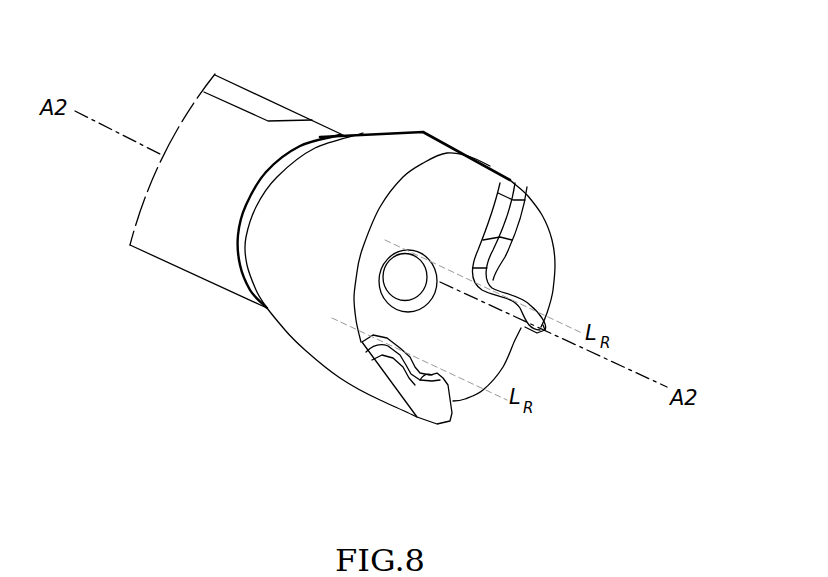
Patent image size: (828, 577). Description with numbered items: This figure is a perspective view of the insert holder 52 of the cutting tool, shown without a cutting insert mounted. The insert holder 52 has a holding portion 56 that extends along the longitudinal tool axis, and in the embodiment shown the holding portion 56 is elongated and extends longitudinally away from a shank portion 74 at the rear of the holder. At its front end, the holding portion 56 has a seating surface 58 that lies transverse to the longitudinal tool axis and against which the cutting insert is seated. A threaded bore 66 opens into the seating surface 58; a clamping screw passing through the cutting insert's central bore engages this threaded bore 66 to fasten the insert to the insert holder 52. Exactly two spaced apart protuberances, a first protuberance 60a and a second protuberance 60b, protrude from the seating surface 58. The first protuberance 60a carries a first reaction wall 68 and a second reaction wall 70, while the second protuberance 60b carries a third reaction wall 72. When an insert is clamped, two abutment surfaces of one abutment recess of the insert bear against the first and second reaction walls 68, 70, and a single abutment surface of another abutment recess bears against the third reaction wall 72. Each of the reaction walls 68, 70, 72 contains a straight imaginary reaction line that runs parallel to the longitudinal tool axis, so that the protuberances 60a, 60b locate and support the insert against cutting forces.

The insert holder 52 is at (349, 261).
The holding portion 56 is at (290, 277).
The seating surface 58 is at (447, 187).
The first protuberance 60a is at (413, 420).
The second protuberance 60b is at (540, 247).
The threaded bore 66 is at (385, 283).
The first reaction wall 68 is at (378, 345).
The second reaction wall 70 is at (410, 357).
The third reaction wall 72 is at (517, 303).
The shank portion 74 is at (167, 232).